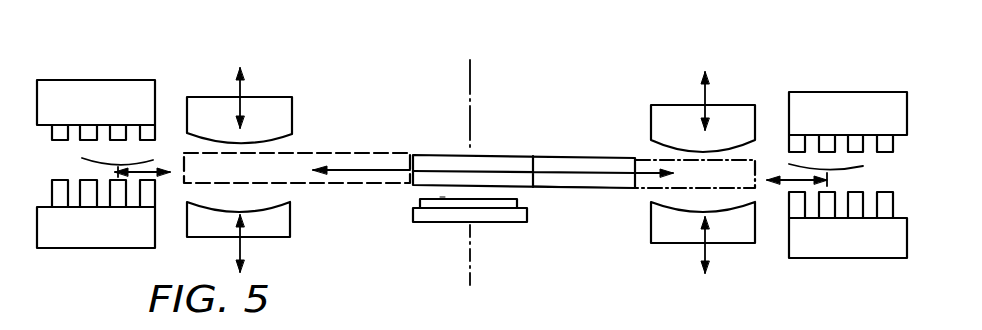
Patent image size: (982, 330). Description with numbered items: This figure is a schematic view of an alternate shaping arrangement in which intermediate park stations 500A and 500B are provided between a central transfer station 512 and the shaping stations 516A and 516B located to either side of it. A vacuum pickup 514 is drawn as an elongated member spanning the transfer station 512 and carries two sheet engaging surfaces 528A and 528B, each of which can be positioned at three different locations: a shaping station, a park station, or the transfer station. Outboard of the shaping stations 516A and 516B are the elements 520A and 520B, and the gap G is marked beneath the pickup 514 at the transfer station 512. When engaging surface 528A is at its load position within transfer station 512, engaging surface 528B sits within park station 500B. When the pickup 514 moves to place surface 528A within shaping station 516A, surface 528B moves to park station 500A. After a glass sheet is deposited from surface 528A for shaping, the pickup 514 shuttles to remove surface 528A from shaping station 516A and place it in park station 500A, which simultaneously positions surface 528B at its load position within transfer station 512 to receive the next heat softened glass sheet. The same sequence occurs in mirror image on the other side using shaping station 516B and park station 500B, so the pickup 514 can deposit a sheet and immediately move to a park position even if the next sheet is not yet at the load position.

The first gripper 520A is at (133, 47).
The shaping station 516A is at (268, 47).
The intermediate park station 500A is at (393, 50).
The transfer station 512 is at (487, 50).
The intermediate park station 500B is at (620, 50).
The shaping station 516B is at (730, 57).
The second gripper 520B is at (880, 57).
The vacuum pickup 514 is at (500, 154).
The sheet engaging surface 528A is at (487, 187).
The sheet engaging surface 528B is at (567, 188).
The gap G is at (443, 200).